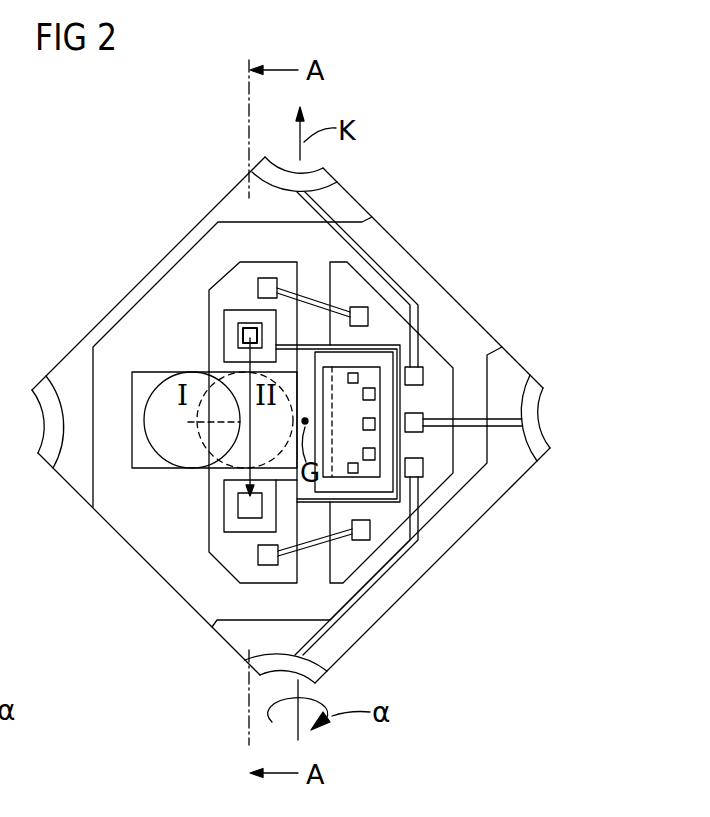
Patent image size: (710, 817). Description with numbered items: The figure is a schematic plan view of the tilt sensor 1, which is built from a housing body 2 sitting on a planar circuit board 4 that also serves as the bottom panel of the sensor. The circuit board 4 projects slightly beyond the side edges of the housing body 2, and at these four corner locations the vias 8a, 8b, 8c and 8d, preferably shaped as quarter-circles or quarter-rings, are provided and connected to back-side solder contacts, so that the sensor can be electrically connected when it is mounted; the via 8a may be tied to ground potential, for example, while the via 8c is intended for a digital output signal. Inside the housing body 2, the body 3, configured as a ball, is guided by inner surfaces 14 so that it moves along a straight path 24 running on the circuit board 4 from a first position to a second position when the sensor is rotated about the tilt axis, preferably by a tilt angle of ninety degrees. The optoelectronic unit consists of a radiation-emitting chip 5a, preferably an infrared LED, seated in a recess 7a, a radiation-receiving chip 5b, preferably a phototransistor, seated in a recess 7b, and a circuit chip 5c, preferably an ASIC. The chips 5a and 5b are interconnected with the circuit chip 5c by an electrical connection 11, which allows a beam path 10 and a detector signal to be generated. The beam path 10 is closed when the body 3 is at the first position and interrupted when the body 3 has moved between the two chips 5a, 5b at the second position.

The tilt sensor 1 is at (425, 134).
The housing body 2 is at (440, 518).
The body 3 is at (143, 420).
The circuit board 4 is at (404, 594).
The radiation-emitting chip 5a is at (245, 333).
The radiation-receiving chip 5b is at (236, 500).
The circuit chip 5c is at (382, 408).
The recess 7a is at (226, 320).
The recess 7b is at (224, 528).
The via 8a is at (320, 684).
The via 8b is at (533, 418).
The via 8c is at (330, 178).
The via 8d is at (52, 428).
The beam path 10 is at (253, 412).
The electrical connection 11 is at (317, 292).
The inner surfaces 14 is at (162, 370).
The path 24 is at (214, 431).